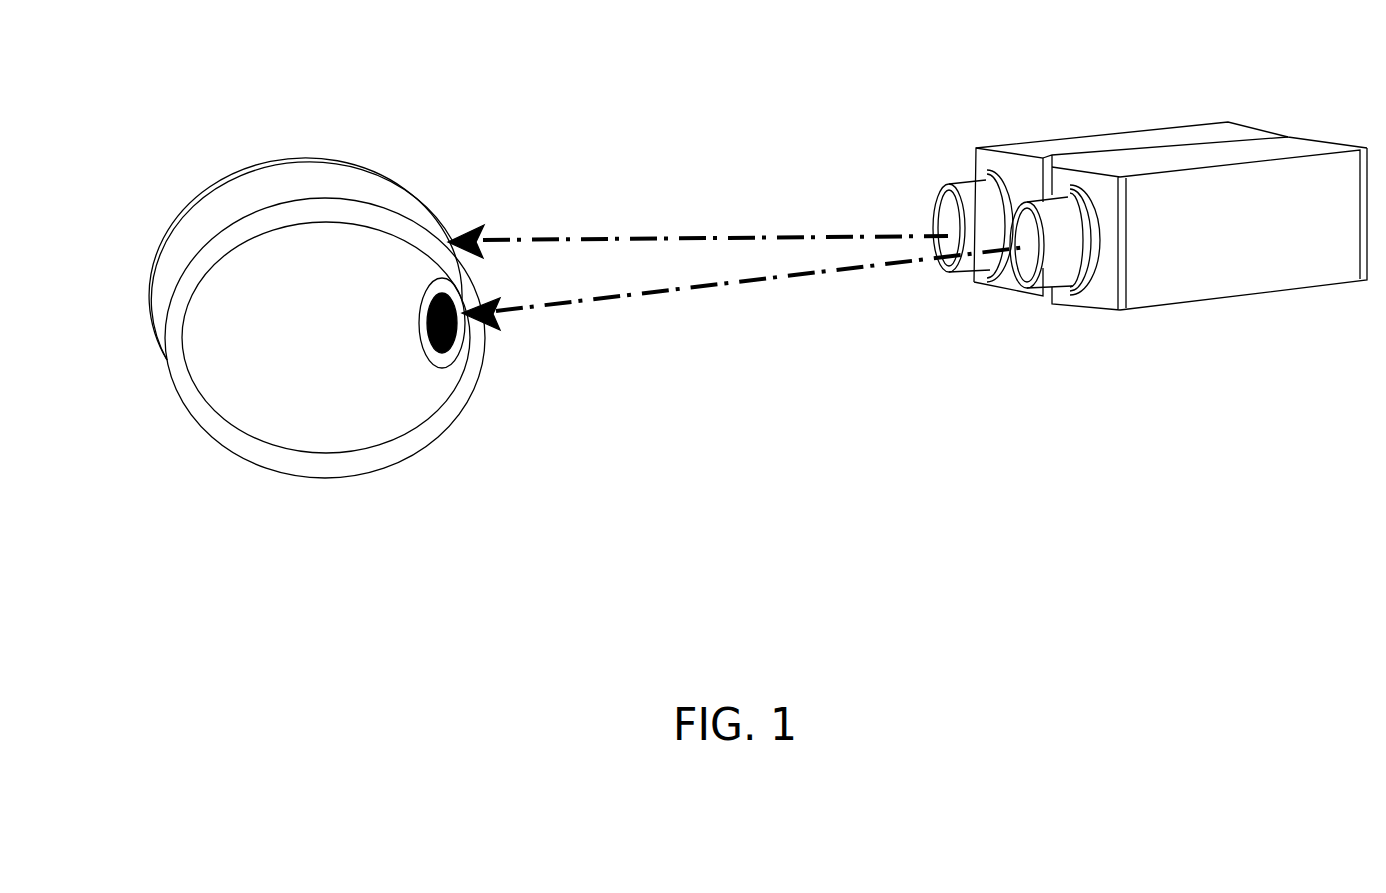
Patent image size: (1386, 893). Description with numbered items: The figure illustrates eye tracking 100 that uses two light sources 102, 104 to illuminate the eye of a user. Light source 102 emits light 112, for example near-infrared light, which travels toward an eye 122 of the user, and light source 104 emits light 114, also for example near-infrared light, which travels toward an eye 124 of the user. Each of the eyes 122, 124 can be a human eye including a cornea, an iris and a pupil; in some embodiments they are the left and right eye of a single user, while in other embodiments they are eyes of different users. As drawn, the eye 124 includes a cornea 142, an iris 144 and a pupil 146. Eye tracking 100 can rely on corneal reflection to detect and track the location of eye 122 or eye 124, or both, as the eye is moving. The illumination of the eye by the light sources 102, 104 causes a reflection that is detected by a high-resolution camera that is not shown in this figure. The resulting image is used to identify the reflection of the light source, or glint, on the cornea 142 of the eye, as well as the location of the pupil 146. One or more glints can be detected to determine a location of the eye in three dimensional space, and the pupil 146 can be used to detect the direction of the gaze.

The eye tracking 100 is at (757, 689).
The light source 102 is at (1112, 145).
The light source 104 is at (1160, 163).
The light 112 is at (712, 233).
The light 114 is at (688, 292).
The eye 122 is at (350, 118).
The eye 124 is at (354, 537).
The cornea 142 is at (483, 226).
The iris 144 is at (457, 297).
The pupil 146 is at (458, 303).